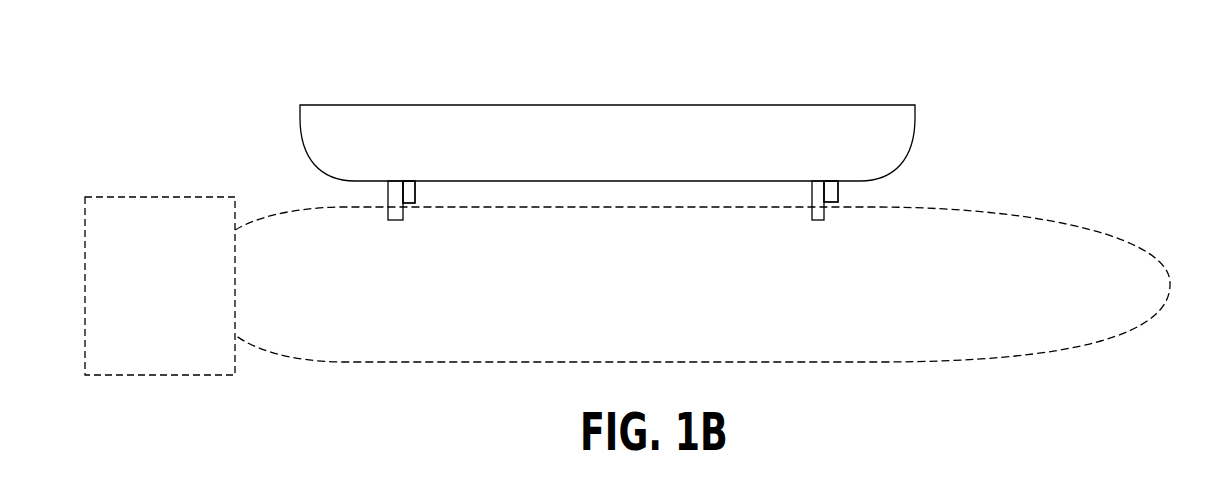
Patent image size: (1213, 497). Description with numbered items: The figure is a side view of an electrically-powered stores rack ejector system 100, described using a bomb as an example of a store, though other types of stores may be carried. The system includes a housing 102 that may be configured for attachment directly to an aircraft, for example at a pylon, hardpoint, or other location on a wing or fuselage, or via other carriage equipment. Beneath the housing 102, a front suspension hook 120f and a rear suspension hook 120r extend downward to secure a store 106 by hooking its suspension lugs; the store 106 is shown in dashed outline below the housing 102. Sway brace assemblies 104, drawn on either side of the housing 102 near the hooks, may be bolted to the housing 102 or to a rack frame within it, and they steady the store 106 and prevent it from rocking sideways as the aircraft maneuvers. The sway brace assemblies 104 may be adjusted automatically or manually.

The electrically-powered stores rack ejector system 100 is at (577, 49).
The housing 102 is at (377, 108).
The sway brace assemblies 104 is at (393, 200).
The store 106 is at (1002, 212).
The rear suspension hook 120r is at (411, 197).
The front suspension hook 120f is at (838, 192).